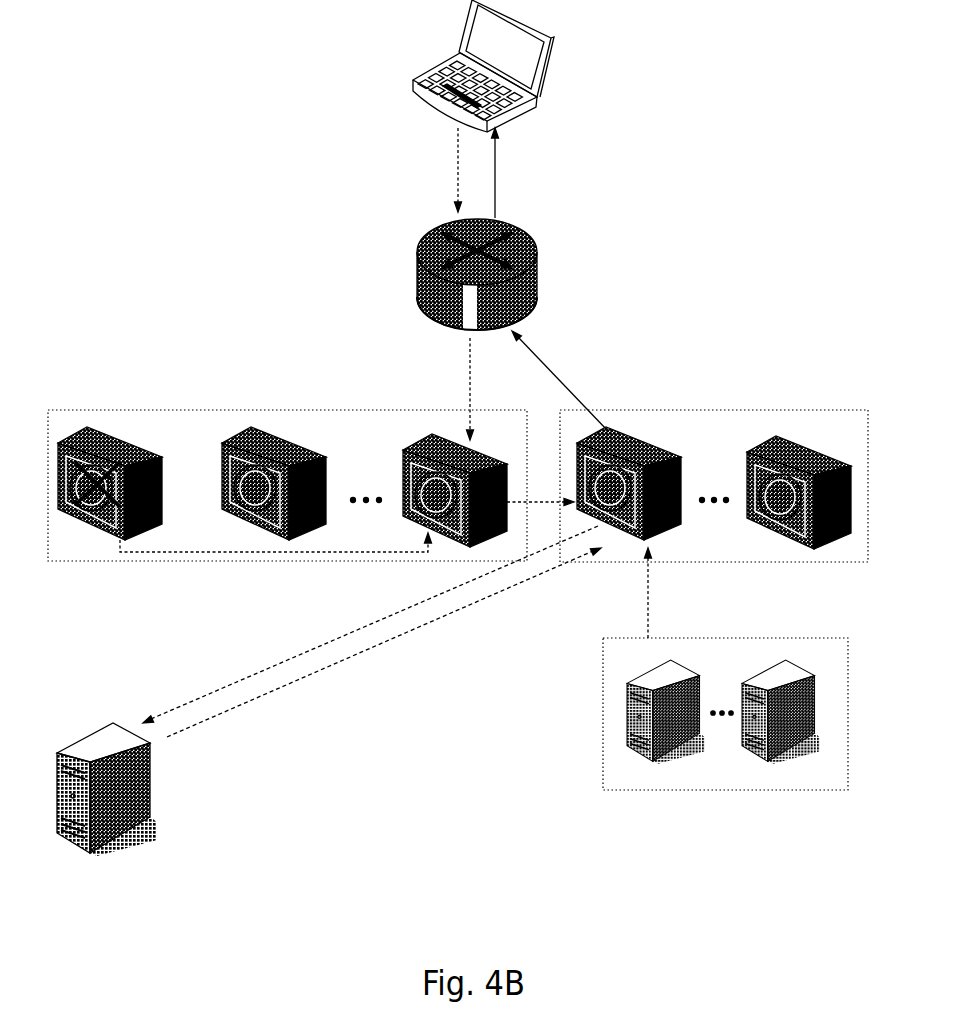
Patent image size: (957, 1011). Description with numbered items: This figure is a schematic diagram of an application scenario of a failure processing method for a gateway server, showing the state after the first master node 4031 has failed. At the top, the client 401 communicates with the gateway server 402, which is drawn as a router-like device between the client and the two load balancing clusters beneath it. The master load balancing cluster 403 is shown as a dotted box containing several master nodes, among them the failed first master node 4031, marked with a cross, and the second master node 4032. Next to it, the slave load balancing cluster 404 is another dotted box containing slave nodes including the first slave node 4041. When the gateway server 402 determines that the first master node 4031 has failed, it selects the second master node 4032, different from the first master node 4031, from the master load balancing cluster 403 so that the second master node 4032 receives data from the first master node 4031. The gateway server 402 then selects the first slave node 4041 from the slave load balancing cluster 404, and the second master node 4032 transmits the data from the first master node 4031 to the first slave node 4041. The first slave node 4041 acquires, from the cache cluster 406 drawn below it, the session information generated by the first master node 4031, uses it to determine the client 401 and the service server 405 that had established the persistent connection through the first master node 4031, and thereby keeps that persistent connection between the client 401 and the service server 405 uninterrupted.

The client 401 is at (543, 78).
The gateway server 402 is at (535, 280).
The master load balancing cluster 403 is at (270, 411).
The first master node 4031 is at (98, 428).
The second master node 4032 is at (417, 445).
The slave load balancing cluster 404 is at (750, 410).
The first slave node 4041 is at (657, 456).
The service server 405 is at (115, 838).
The cache cluster 406 is at (797, 638).